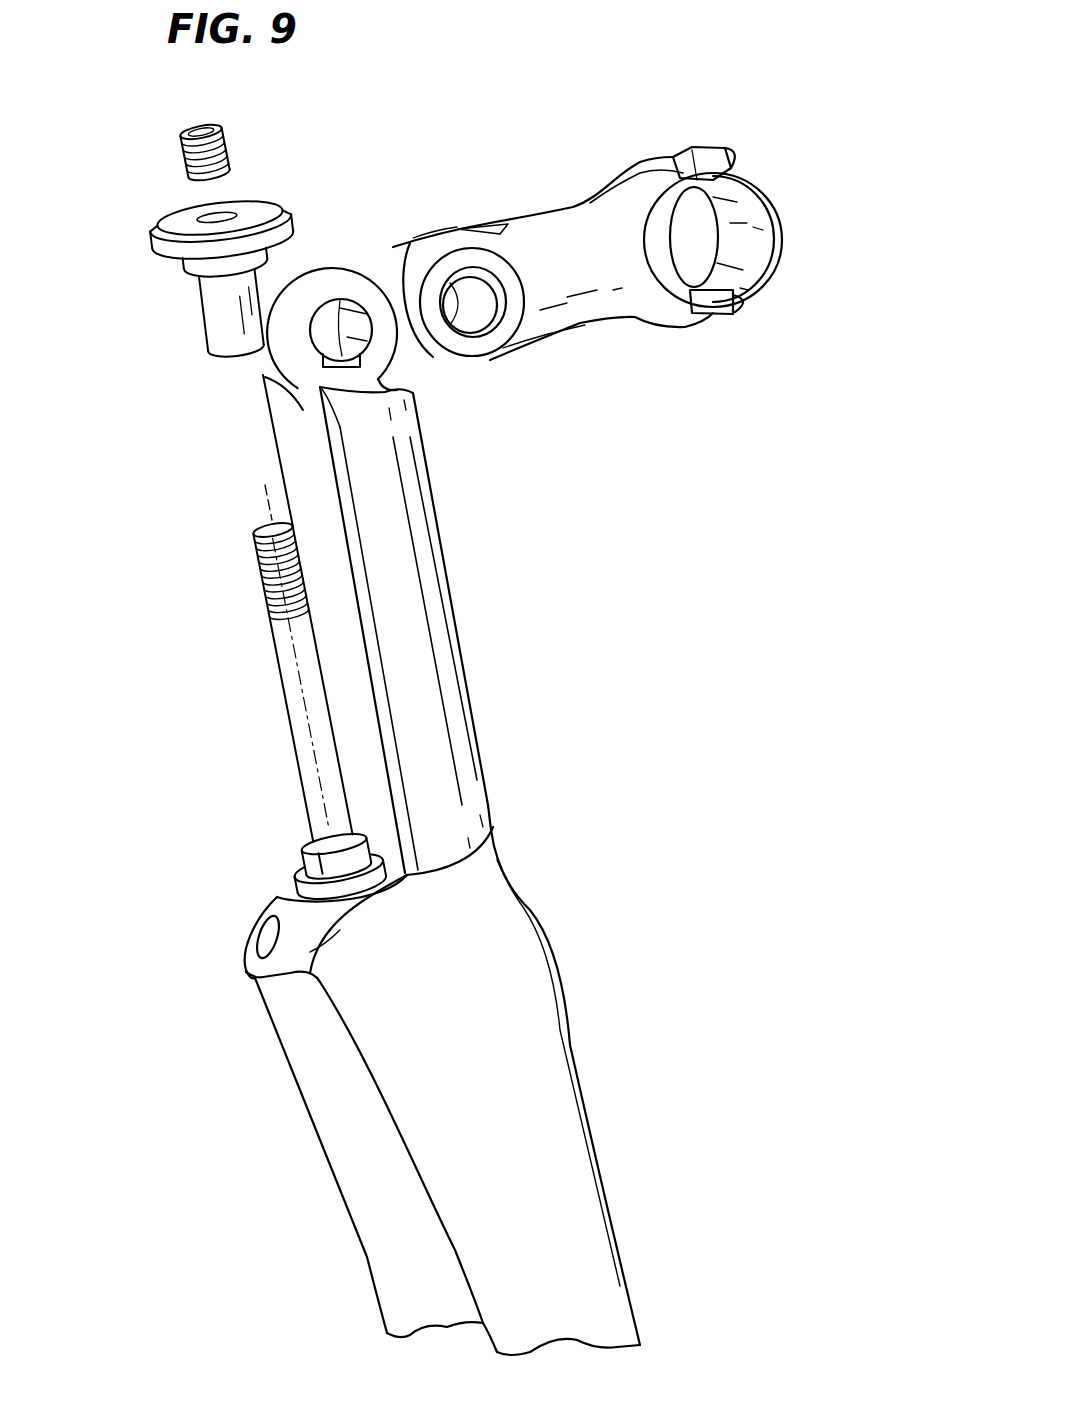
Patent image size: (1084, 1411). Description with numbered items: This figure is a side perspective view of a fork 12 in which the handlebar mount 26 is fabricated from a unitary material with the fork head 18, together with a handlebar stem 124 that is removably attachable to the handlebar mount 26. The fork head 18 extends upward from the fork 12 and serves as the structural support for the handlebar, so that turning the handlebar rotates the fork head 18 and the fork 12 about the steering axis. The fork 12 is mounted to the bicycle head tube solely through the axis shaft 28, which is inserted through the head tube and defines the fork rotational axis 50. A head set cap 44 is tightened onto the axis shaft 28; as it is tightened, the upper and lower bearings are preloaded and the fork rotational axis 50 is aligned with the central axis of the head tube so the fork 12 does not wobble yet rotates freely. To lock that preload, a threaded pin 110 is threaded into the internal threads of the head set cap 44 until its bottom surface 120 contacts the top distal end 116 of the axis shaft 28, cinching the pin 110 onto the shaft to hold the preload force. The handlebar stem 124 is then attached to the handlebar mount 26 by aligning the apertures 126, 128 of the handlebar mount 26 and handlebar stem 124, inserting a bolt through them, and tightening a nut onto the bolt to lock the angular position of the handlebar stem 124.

The fork 12 is at (668, 990).
The fork head 18 is at (402, 623).
The handlebar mount 26 is at (322, 293).
The axis shaft 28 is at (297, 733).
The head set cap 44 is at (150, 300).
The fork rotational axis 50 is at (267, 497).
The threaded pin 110 is at (244, 110).
The top distal end 116 is at (260, 523).
The bottom surface 120 is at (228, 176).
The handlebar stem 124 is at (590, 347).
The aperture 126 is at (470, 313).
The steerer tube bore 128 is at (330, 323).